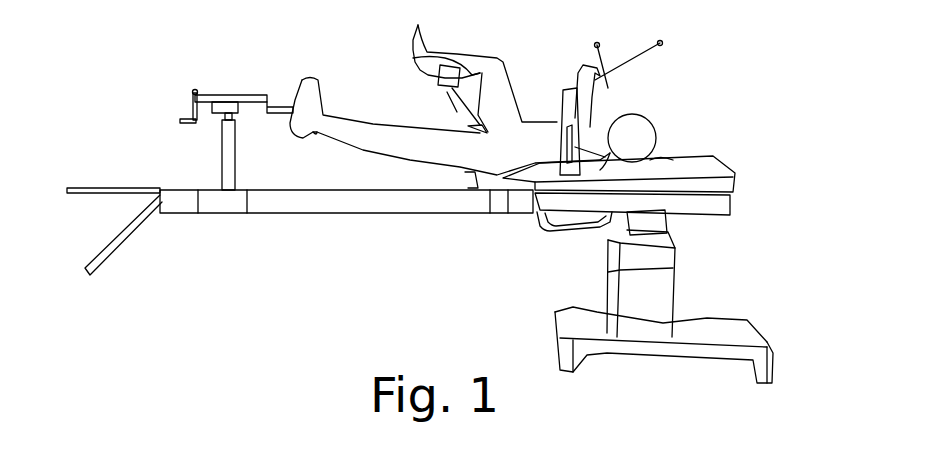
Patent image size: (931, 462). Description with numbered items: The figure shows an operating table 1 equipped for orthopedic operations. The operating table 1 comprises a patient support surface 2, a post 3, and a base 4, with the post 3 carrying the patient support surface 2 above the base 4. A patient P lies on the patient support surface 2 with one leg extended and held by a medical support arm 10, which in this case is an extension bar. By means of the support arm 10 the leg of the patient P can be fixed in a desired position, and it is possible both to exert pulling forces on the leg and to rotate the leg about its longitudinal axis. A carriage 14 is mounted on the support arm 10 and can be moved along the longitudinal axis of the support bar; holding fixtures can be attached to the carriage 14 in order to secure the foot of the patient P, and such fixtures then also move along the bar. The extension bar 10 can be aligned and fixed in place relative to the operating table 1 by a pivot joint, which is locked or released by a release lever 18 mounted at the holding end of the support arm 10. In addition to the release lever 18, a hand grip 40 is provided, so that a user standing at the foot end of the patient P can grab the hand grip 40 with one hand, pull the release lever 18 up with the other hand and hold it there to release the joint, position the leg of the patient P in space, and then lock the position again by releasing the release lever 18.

The operating table 1 is at (715, 55).
The patient support surface 2 is at (727, 167).
The post 3 is at (663, 258).
The base 4 is at (768, 347).
The medical support arm 10 is at (380, 215).
The carriage 14 is at (230, 207).
The release lever 18 is at (107, 253).
The hand grip 40 is at (83, 187).
The patient P is at (557, 130).